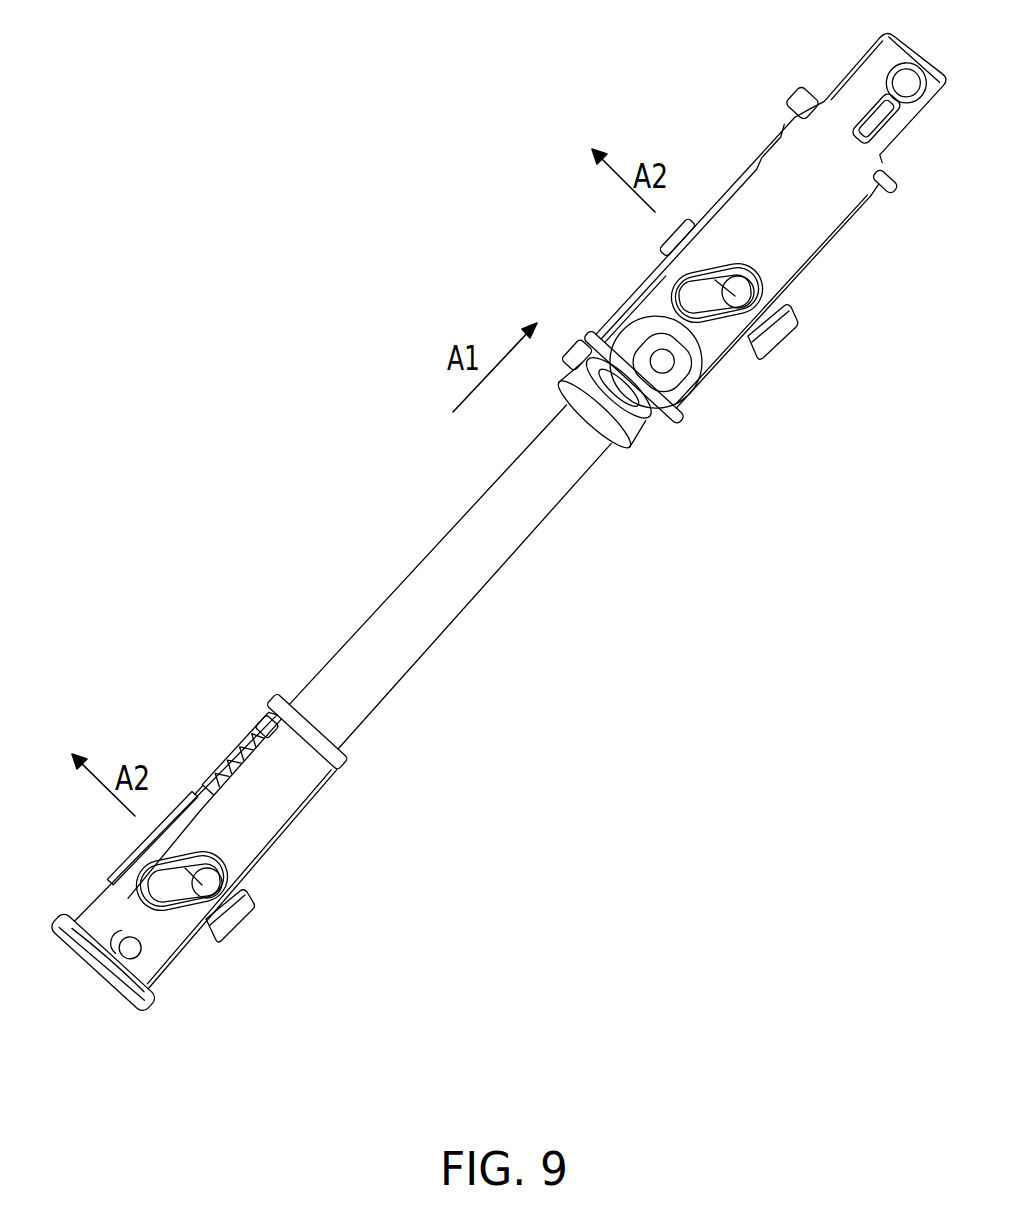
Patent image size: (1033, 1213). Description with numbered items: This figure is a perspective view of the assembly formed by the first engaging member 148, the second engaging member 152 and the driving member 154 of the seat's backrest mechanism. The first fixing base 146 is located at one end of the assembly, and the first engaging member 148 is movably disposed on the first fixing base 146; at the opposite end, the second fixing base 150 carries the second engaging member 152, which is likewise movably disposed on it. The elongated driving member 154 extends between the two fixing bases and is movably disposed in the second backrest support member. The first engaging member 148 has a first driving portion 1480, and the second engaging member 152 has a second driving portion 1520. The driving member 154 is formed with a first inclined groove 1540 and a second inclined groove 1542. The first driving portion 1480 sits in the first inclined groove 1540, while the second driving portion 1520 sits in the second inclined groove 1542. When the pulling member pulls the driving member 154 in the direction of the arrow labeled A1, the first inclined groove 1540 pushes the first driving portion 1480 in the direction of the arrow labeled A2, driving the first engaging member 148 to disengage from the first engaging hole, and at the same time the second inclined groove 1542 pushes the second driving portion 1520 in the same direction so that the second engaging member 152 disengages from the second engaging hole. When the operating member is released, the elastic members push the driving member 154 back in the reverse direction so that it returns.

The first fixing base 146 is at (642, 270).
The first driving portion 1480 is at (742, 292).
The first engaging member 148 is at (784, 343).
The first inclined groove 1540 is at (707, 305).
The driving member 154 is at (418, 572).
The second fixing base 150 is at (90, 907).
The second driving portion 1520 is at (223, 884).
The second engaging member 152 is at (246, 925).
The second inclined groove 1542 is at (168, 896).